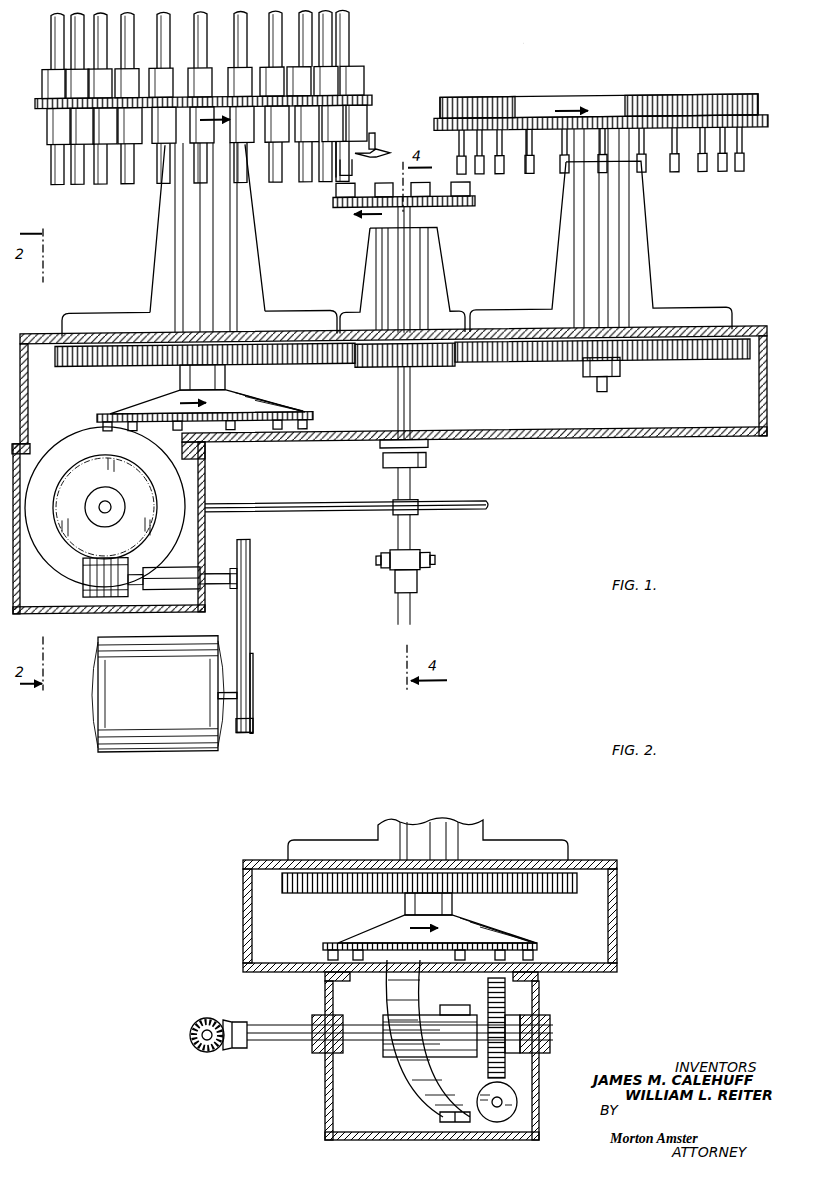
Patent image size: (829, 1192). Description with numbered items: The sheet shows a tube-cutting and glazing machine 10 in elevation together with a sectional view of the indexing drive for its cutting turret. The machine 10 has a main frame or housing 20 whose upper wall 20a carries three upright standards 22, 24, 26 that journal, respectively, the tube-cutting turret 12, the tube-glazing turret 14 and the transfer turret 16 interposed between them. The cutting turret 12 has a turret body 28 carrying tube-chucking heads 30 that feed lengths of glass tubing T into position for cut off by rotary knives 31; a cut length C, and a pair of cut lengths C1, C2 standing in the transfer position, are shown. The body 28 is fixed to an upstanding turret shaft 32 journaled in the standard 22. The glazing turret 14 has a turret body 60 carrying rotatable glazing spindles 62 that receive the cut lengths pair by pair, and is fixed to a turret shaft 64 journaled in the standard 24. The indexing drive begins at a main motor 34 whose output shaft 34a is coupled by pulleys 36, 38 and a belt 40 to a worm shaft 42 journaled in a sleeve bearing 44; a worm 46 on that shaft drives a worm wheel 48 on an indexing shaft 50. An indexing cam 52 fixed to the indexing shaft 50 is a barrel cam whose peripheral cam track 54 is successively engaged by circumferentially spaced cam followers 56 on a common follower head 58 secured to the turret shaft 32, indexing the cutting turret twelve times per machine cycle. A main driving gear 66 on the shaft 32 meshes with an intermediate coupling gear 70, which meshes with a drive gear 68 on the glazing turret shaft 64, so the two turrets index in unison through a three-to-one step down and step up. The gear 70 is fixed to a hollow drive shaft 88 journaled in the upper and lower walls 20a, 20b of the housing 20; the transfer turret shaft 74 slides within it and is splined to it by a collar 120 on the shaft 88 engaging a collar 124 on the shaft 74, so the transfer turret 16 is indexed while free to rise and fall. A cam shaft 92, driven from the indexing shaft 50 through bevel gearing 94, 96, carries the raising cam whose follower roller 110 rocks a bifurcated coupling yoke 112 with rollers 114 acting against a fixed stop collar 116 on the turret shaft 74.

In FIG. 1, the tube-cutting and glazing machine 10 is at (522, 47).
In FIG. 1, the tube-cutting turret 12 is at (227, 115).
In FIG. 1, the glass tubing T is at (330, 45).
In FIG. 1, the tube-glazing turret 14 is at (601, 127).
In FIG. 1, the transfer turret 16 is at (464, 215).
In FIG. 1, the main frame or housing 20 is at (395, 384).
In FIG. 2, the main frame or housing 20 is at (446, 910).
In FIG. 1, the upper wall 20a is at (678, 332).
In FIG. 2, the upper wall 20a is at (598, 862).
In FIG. 1, the lower wall 20b is at (620, 450).
In FIG. 2, the lower wall 20b is at (601, 963).
In FIG. 1, the upright standard 22 is at (236, 277).
In FIG. 2, the upright standard 22 is at (463, 833).
In FIG. 1, the upright standard 24 is at (630, 283).
In FIG. 1, the upright standard 26 is at (433, 299).
In FIG. 1, the turret body 28 is at (380, 100).
In FIG. 1, the tube-chucking heads 30 is at (358, 131).
In FIG. 1, the rotary knives 31 is at (381, 160).
In FIG. 1, the turret shaft 32 is at (226, 384).
In FIG. 2, the turret shaft 32 is at (402, 900).
In FIG. 1, the main motor 34 is at (189, 722).
In FIG. 1, the output shaft 34a is at (240, 697).
In FIG. 1, the pulley 36 is at (256, 680).
In FIG. 1, the pulley 38 is at (252, 621).
In FIG. 1, the belt 40 is at (251, 650).
In FIG. 1, the worm shaft 42 is at (228, 570).
In FIG. 2, the worm shaft 42 is at (495, 1108).
In FIG. 1, the sleeve bearing 44 is at (182, 590).
In FIG. 1, the worm 46 is at (95, 600).
In FIG. 2, the worm 46 is at (516, 1098).
In FIG. 1, the worm wheel 48 is at (80, 538).
In FIG. 2, the worm wheel 48 is at (506, 1002).
In FIG. 1, the indexing shaft 50 is at (108, 514).
In FIG. 2, the indexing shaft 50 is at (292, 1042).
In FIG. 1, the indexing cam 52 is at (180, 500).
In FIG. 2, the indexing cam 52 is at (432, 1068).
In FIG. 2, the peripheral cam track 54 is at (423, 1012).
In FIG. 1, the cam followers 56 is at (315, 429).
In FIG. 2, the cam followers 56 is at (540, 953).
In FIG. 1, the follower head 58 is at (150, 400).
In FIG. 2, the follower head 58 is at (482, 931).
In FIG. 1, the turret body 60 is at (532, 104).
In FIG. 1, the glazing spindles 62 is at (664, 178).
In FIG. 1, the turret shaft 64 is at (622, 376).
In FIG. 1, the main driving gear 66 is at (72, 374).
In FIG. 2, the main driving gear 66 is at (283, 886).
In FIG. 1, the drive gear 68 is at (528, 370).
In FIG. 1, the intermediate coupling gear 70 is at (378, 376).
In FIG. 1, the turret shaft 74 is at (410, 226).
In FIG. 1, the hollow cylindrical drive shaft 88 is at (415, 400).
In FIG. 1, the cam shaft 92 is at (338, 514).
In FIG. 2, the cam shaft 92 is at (203, 1038).
In FIG. 2, the bevel gearing 94 is at (233, 1052).
In FIG. 2, the bevel gearing 96 is at (208, 1018).
In FIG. 1, the follower roller 110 is at (424, 585).
In FIG. 1, the bifurcated coupling yoke 112 is at (378, 562).
In FIG. 1, the rollers 114 is at (388, 573).
In FIG. 1, the fixed stop collar 116 is at (421, 553).
In FIG. 1, the coupling head or collar 120 is at (390, 470).
In FIG. 1, the coupling head or collar 124 is at (395, 520).
In FIG. 1, the cut length of glass tubing C is at (506, 174).
In FIG. 1, the cut length of glass tubing C1 is at (338, 158).
In FIG. 1, the cut length of glass tubing C2 is at (353, 184).